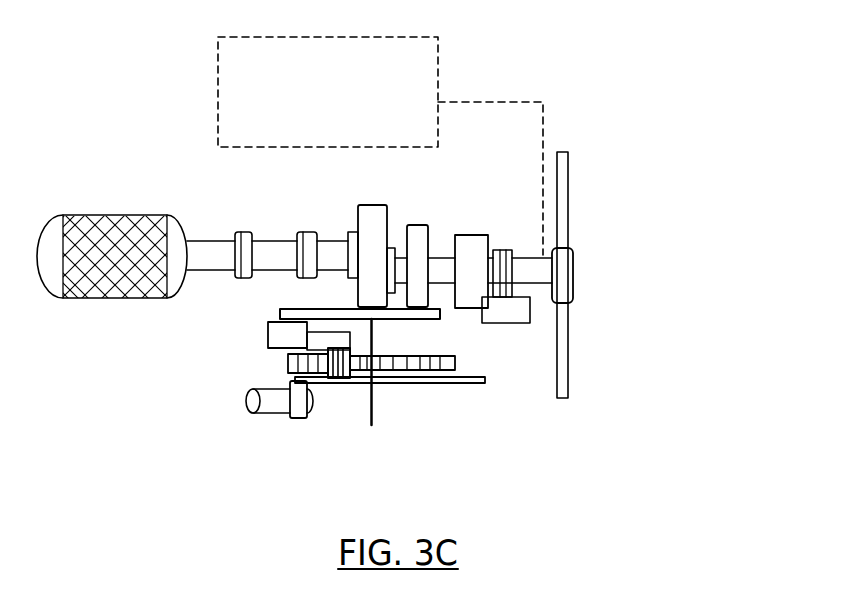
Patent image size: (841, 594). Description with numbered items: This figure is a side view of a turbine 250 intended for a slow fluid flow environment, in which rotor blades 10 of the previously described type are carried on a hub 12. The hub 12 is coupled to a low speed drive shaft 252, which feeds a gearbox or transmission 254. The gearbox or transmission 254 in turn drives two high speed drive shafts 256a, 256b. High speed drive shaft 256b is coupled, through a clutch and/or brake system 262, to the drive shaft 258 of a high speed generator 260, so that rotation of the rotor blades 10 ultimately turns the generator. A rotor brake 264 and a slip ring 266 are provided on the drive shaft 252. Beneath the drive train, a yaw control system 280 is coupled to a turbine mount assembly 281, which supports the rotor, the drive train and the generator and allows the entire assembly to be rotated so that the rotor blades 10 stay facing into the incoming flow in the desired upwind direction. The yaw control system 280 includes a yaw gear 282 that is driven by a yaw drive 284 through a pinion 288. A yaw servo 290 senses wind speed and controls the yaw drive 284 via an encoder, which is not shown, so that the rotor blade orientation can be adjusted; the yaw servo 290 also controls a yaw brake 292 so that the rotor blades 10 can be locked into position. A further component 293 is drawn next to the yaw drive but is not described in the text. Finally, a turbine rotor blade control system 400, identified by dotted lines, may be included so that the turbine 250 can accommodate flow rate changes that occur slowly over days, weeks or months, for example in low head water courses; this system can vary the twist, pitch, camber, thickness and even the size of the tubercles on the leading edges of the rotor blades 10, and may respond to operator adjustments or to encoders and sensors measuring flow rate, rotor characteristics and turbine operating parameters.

The rotor blade 10 is at (570, 350).
The hub 12 is at (562, 277).
The turbine 250 is at (646, 141).
The low speed drive shaft 252 is at (543, 285).
The gearbox or transmission 254 is at (375, 215).
The high speed drive shaft 256a is at (330, 248).
The high speed drive shaft 256b is at (278, 255).
The drive shaft 258 is at (202, 257).
The high speed generator 260 is at (93, 213).
The clutch and/or brake system 262 is at (240, 247).
The rotor brake 264 is at (508, 250).
The slip ring 266 is at (468, 247).
The yaw control system 280 is at (268, 453).
The turbine mount assembly 281 is at (348, 314).
The yaw gear 282 is at (455, 363).
The yaw drive 284 is at (286, 358).
The pinion 288 is at (342, 384).
The yaw servo 290 is at (277, 337).
The yaw brake 292 is at (460, 385).
The actuator cylinder 293 is at (272, 400).
The turbine rotor blade control system 400 is at (438, 82).